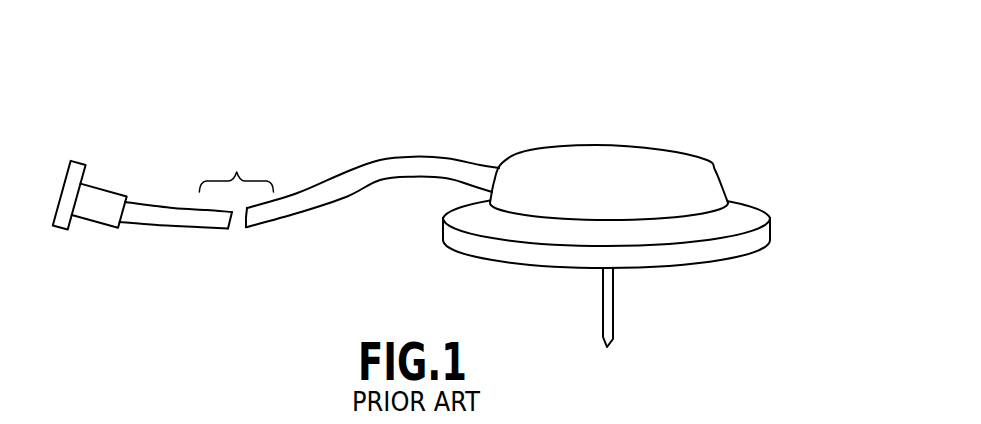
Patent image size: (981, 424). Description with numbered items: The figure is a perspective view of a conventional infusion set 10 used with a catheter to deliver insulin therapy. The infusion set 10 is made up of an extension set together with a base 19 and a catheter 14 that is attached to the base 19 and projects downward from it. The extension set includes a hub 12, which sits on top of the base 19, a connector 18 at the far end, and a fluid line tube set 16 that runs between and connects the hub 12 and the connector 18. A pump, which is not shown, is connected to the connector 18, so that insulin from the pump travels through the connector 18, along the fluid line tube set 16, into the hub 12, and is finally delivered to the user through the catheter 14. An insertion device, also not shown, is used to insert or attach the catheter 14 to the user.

The infusion set 10 is at (782, 110).
The hub 12 is at (610, 153).
The catheter 14 is at (615, 313).
The fluid line tube set 16 is at (397, 170).
The connector 18 is at (92, 208).
The base 19 is at (735, 255).